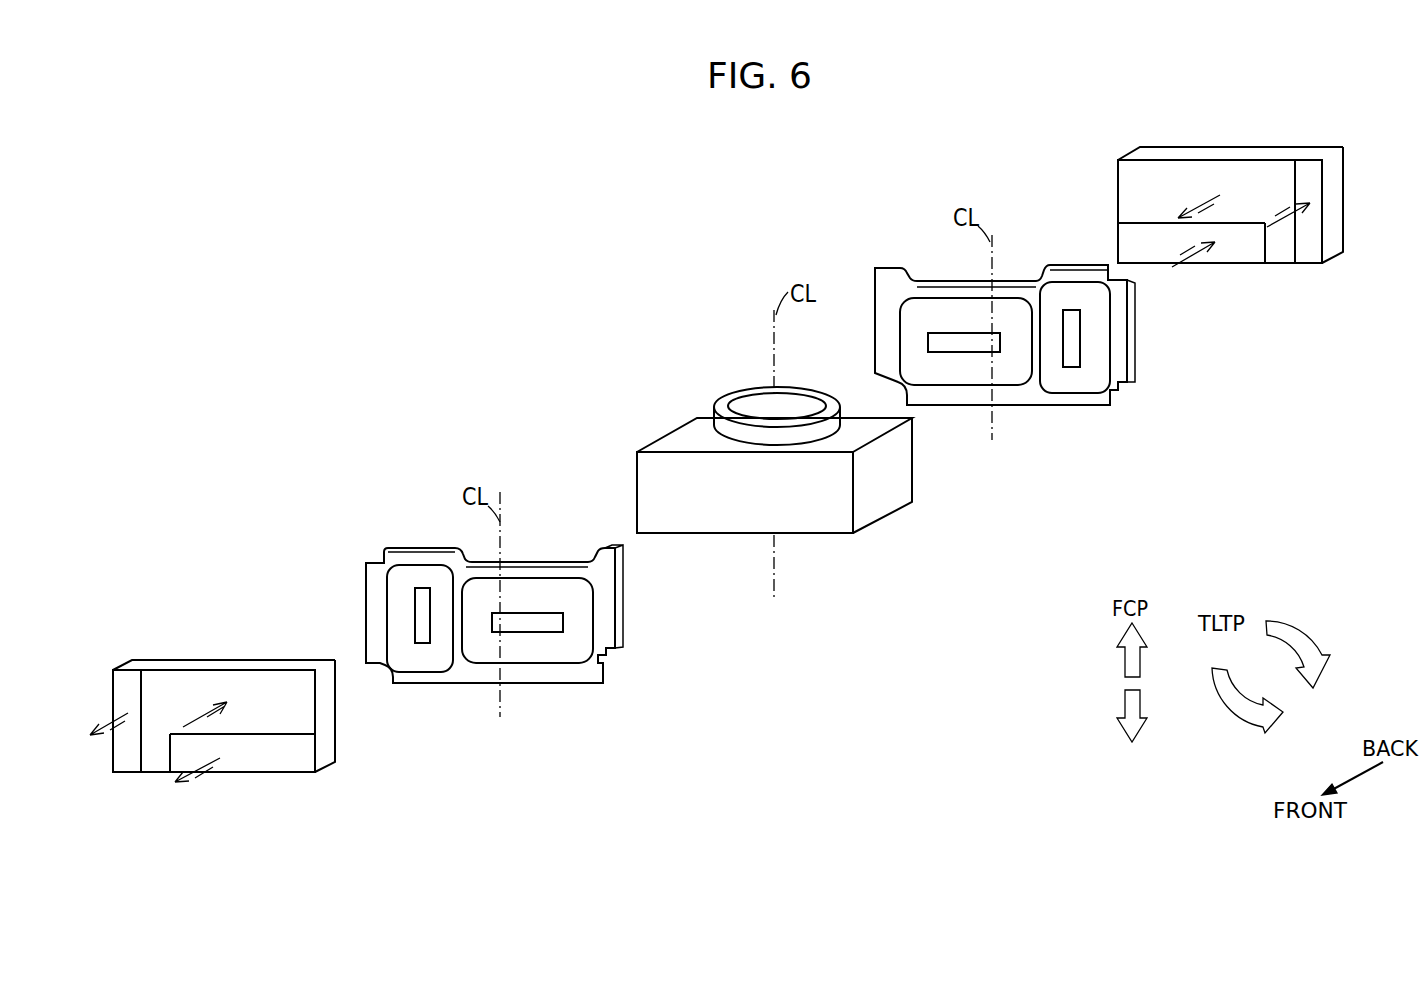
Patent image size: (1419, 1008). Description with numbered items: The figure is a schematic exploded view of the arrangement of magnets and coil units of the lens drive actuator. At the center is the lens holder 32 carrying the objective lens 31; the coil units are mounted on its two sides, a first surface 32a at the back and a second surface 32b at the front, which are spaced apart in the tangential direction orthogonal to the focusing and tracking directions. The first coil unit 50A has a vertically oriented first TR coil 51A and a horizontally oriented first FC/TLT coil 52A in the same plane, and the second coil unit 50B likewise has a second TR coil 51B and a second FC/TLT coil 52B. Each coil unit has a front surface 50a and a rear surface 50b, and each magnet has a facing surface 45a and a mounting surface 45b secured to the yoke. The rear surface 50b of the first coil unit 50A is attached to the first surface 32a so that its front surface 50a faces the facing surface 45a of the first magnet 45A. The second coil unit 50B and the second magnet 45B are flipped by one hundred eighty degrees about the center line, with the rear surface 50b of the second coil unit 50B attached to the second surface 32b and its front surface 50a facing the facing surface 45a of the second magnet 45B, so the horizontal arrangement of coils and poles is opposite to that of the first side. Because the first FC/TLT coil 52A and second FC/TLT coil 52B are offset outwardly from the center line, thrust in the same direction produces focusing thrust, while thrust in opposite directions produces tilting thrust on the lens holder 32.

The objective lens 31 is at (743, 402).
The lens holder 32 is at (817, 518).
The first surface 32a is at (912, 462).
The second surface 32b is at (655, 488).
The first magnet 45A is at (1277, 253).
The second magnet 45B is at (298, 773).
The facing surface 45a is at (185, 654).
The mounting surface 45b is at (160, 764).
The first coil unit 50A is at (1073, 400).
The second coil unit 50B is at (545, 677).
The front surface 50a is at (417, 677).
The rear surface 50b is at (567, 560).
The first TR coil 51A is at (1097, 365).
The second TR coil 51B is at (412, 577).
The first FC/TLT coil 52A is at (927, 303).
The second FC/TLT coil 52B is at (587, 633).